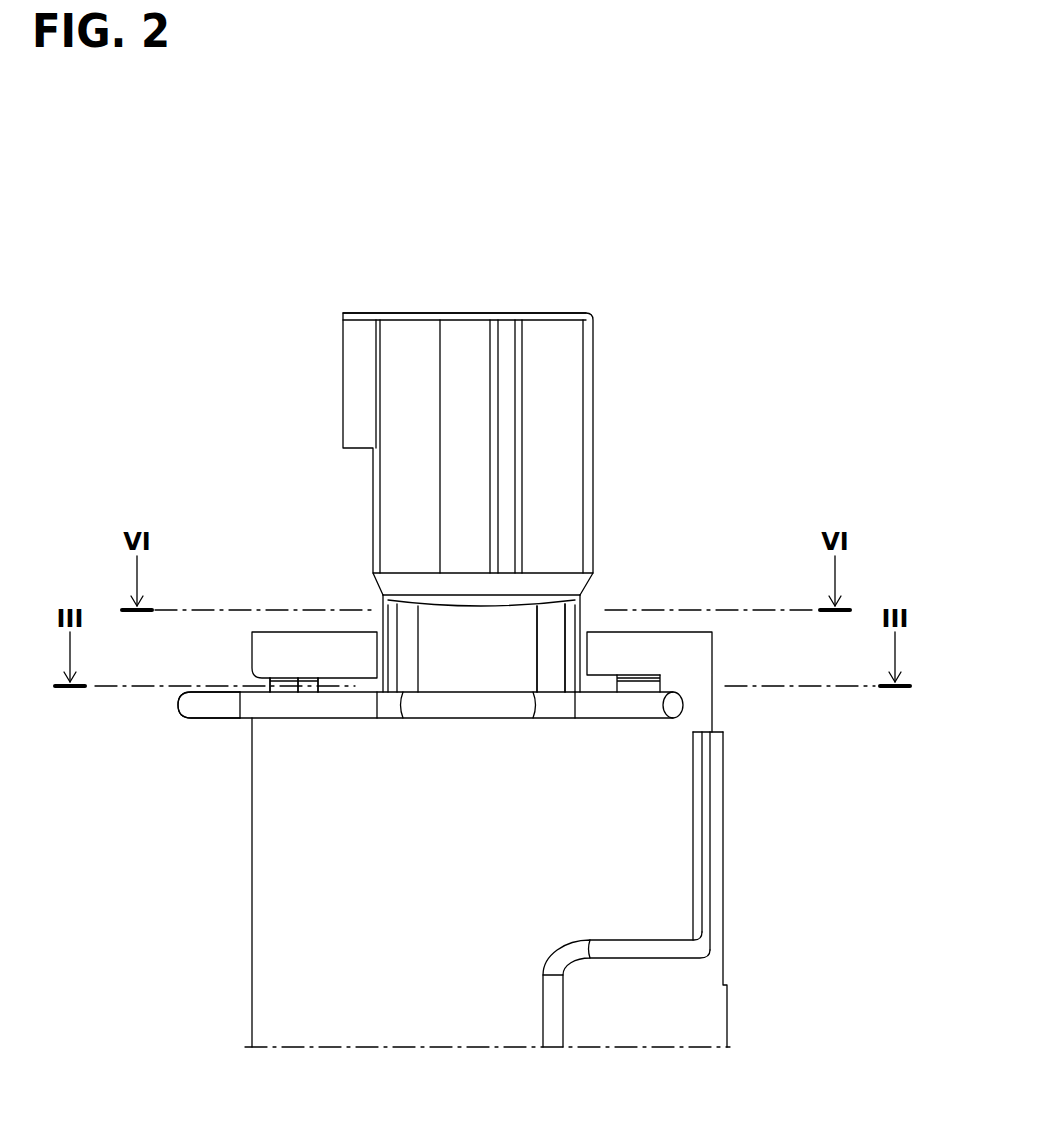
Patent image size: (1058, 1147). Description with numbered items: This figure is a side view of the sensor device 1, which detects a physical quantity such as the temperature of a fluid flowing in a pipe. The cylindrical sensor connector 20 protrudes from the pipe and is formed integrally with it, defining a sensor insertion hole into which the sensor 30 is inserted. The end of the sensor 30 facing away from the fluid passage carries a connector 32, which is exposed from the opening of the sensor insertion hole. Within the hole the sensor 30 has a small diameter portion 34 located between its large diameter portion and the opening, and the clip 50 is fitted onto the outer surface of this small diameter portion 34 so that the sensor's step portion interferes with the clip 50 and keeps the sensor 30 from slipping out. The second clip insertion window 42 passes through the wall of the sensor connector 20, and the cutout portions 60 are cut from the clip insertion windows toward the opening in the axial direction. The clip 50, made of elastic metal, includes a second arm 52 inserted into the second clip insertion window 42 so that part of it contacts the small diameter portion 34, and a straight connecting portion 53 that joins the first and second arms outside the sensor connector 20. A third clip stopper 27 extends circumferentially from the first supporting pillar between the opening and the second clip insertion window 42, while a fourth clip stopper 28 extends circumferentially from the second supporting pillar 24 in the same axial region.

The sensor device 1 is at (705, 272).
The sensor connector 20 is at (512, 990).
The second supporting pillar 24 is at (697, 708).
The third clip stopper 27 is at (353, 650).
The fourth clip stopper 28 is at (612, 655).
The sensor 30 is at (598, 398).
The connector 32 is at (463, 312).
The small diameter portion 34 is at (502, 632).
The second clip insertion window 42 is at (358, 688).
The clip 50 is at (211, 722).
The second arm 52 is at (463, 705).
The connecting portion 53 is at (190, 704).
The cutout portions 60 is at (590, 648).